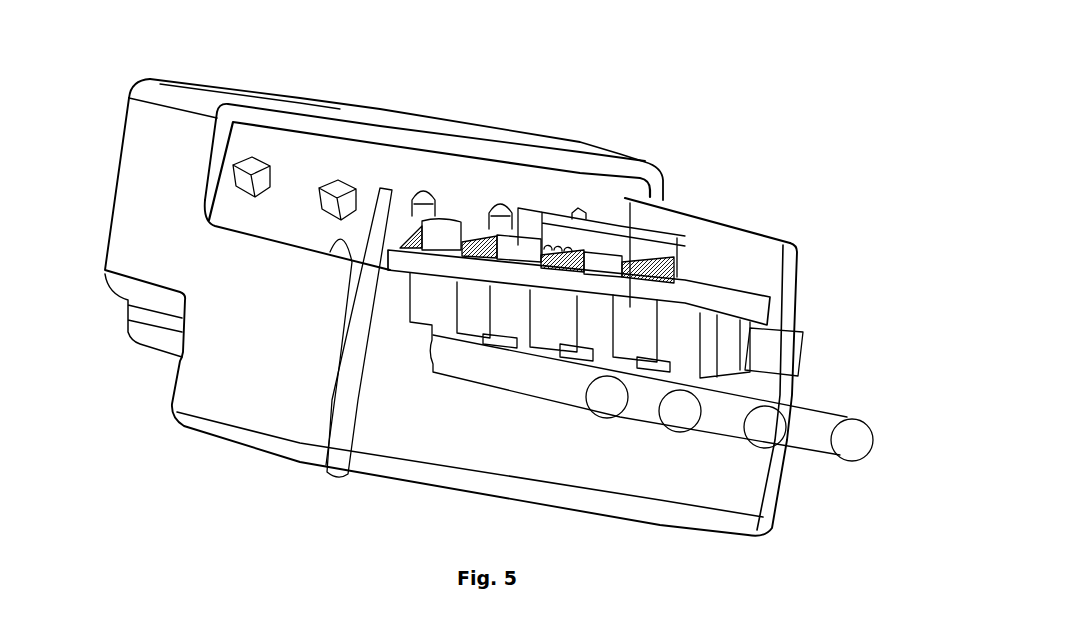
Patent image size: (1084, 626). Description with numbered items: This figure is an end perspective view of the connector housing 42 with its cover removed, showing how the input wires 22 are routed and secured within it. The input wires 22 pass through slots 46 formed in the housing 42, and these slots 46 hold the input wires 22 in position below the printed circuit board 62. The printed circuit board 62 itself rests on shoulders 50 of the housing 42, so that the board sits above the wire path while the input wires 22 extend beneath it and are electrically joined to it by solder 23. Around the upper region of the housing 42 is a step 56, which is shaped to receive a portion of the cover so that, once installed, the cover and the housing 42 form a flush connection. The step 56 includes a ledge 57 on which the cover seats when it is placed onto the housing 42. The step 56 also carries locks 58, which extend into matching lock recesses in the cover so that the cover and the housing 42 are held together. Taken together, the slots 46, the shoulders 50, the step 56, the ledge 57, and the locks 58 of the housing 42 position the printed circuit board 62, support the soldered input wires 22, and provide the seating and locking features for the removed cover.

The input wires 22 is at (880, 448).
The solder 23 is at (622, 254).
The housing 42 is at (275, 298).
The slots 46 is at (580, 370).
The shoulders 50 is at (757, 343).
The step 56 is at (285, 222).
The ledge 57 is at (330, 252).
The locks 58 is at (313, 118).
The printed circuit board 62 is at (769, 309).